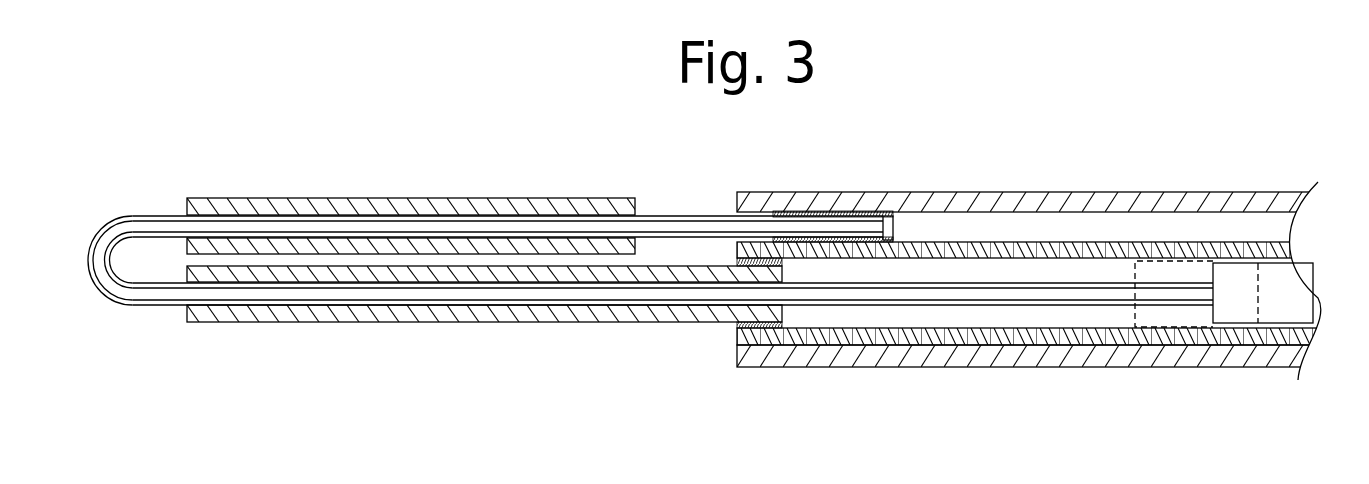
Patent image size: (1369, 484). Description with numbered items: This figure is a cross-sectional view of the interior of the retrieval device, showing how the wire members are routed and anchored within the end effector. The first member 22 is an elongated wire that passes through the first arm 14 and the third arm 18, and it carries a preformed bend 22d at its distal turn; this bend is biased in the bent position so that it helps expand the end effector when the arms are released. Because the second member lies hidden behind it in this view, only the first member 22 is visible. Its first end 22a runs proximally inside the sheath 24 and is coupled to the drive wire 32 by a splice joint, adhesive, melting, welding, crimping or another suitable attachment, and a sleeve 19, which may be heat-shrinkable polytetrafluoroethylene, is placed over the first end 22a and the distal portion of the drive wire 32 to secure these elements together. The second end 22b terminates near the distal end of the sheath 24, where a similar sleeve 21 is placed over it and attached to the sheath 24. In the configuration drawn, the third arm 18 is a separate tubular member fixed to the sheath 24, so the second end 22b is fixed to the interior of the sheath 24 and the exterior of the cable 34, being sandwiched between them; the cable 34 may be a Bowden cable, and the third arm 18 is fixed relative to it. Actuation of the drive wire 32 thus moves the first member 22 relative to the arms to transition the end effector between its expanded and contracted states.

The first arm 14 is at (450, 207).
The third arm 18 is at (465, 313).
The sleeve 19 is at (1258, 292).
The sleeve 21 is at (803, 213).
The first member 22 is at (626, 248).
The first end 22a is at (1193, 292).
The second end 22b is at (877, 225).
The preformed bend 22d is at (115, 289).
The sheath 24 is at (982, 202).
The drive wire 32 is at (1283, 280).
The cable 34 is at (792, 338).